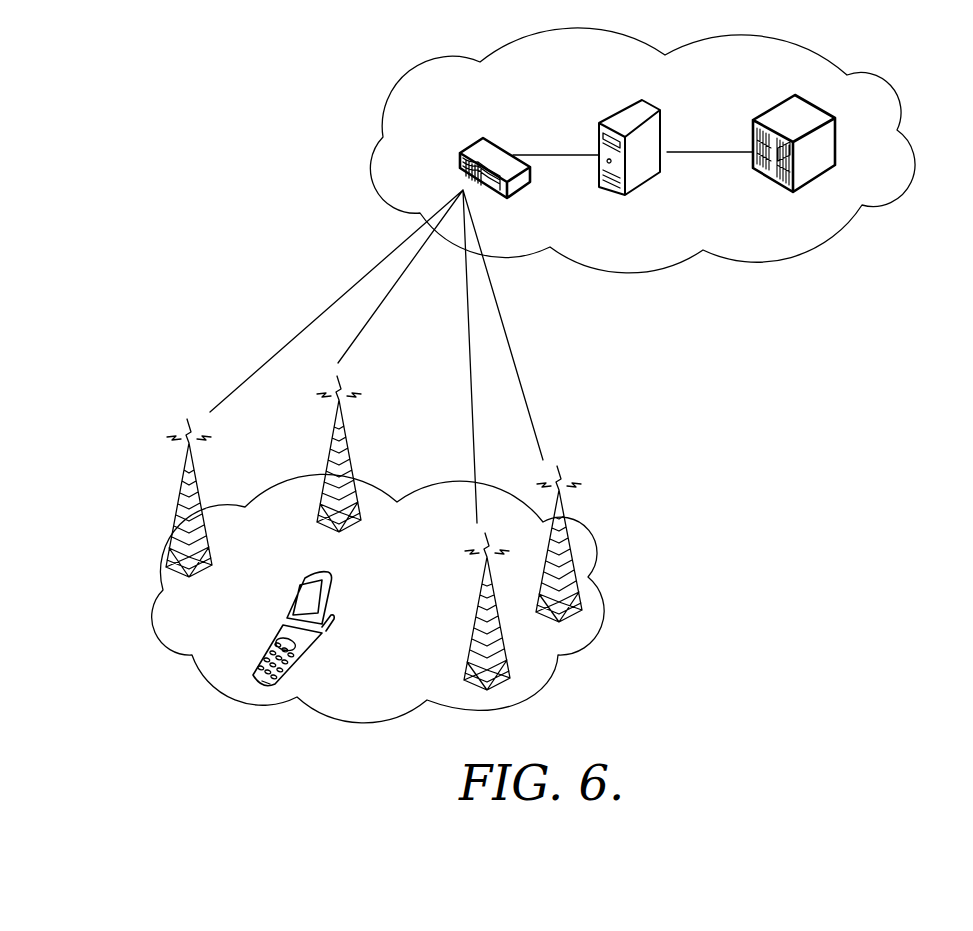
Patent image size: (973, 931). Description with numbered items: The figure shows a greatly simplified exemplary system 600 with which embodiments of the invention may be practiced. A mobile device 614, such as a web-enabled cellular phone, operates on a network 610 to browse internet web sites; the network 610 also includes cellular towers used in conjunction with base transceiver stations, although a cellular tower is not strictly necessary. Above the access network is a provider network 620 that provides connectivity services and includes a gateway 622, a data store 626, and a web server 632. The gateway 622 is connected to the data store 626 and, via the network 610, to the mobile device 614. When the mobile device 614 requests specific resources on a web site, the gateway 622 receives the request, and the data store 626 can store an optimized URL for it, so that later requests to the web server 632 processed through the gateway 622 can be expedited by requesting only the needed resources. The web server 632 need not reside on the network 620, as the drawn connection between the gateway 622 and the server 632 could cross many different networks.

The system 600 is at (140, 100).
The network 610 is at (365, 727).
The mobile device 614 is at (310, 572).
The network 620 is at (402, 76).
The gateway 622 is at (470, 146).
The data store 626 is at (613, 113).
The web server 632 is at (769, 112).